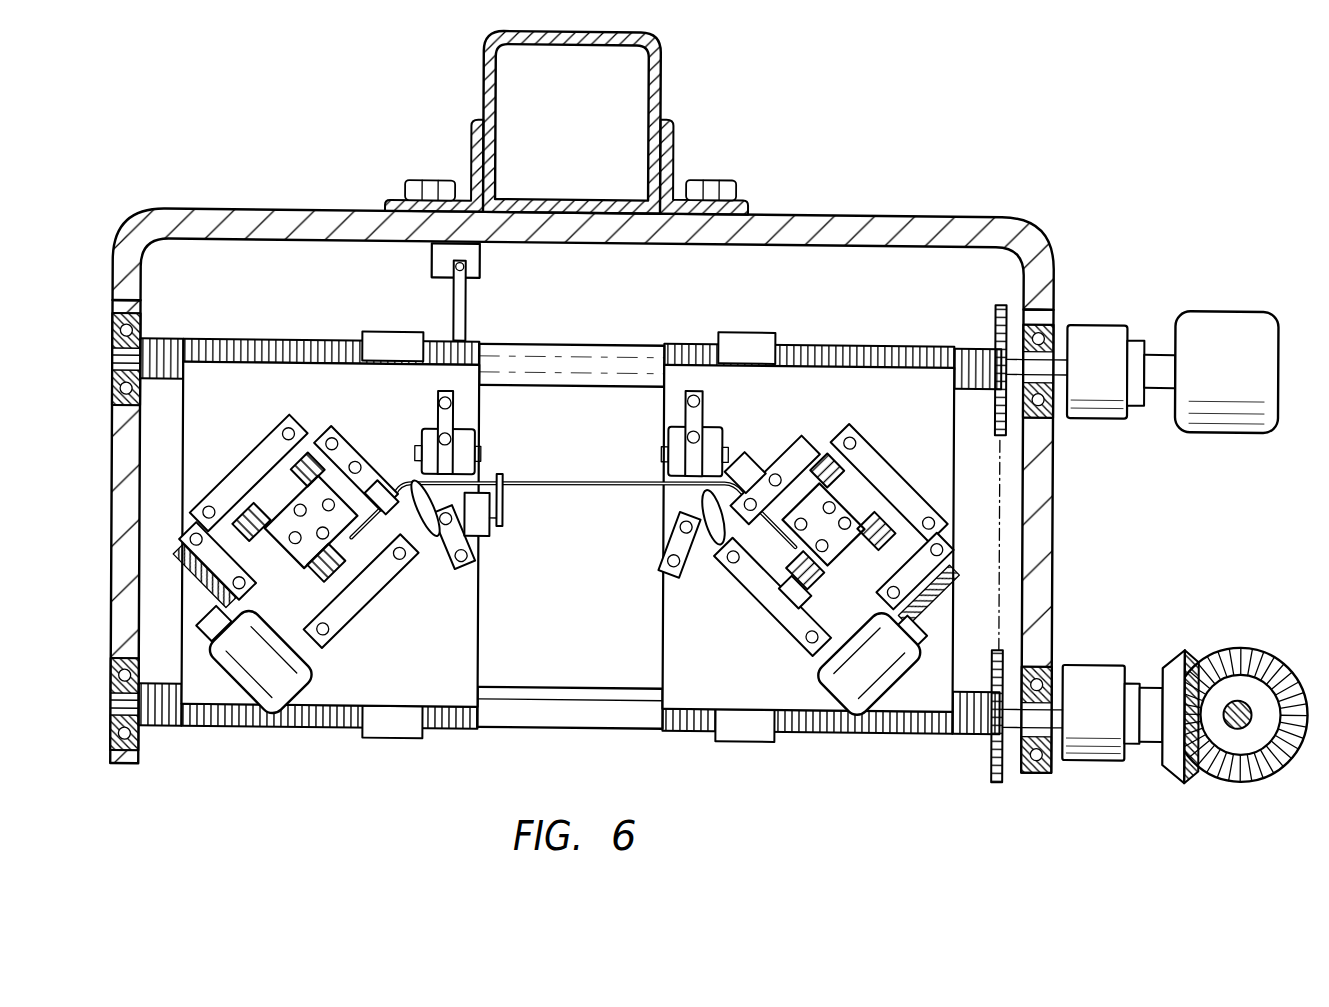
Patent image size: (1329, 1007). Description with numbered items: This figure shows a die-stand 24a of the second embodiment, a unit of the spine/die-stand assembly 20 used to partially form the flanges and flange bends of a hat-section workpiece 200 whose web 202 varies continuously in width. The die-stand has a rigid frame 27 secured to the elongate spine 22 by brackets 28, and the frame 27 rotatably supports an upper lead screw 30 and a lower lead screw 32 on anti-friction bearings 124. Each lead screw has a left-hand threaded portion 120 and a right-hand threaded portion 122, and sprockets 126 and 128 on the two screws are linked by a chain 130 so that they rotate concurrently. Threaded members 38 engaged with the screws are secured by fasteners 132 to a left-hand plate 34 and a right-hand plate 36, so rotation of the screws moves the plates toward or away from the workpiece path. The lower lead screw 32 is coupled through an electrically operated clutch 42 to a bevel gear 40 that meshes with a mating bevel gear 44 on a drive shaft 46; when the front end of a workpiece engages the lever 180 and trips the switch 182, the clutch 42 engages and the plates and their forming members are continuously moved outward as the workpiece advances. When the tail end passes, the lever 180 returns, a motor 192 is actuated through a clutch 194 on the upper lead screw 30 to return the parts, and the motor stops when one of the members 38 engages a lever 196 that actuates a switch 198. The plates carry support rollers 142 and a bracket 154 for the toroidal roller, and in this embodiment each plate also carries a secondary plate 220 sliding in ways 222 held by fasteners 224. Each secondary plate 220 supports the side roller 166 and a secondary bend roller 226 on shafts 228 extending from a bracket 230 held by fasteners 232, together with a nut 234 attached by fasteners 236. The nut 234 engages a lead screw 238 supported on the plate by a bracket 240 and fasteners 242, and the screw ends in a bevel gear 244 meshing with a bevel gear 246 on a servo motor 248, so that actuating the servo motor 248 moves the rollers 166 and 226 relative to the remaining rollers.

The spine/die-stand assembly 20 is at (380, 76).
The spine 22 is at (485, 71).
The die-stand 24a is at (265, 190).
The frame 27 is at (1052, 514).
The brackets 28 is at (472, 147).
The upper lead screw 30 is at (910, 328).
The lower lead screw 32 is at (948, 731).
The left-hand plate 34 is at (184, 460).
The right-hand plate 36 is at (955, 437).
The members 38 is at (393, 342).
The bevel gear 40 is at (1180, 754).
The clutch 42 is at (1089, 670).
The bevel gear 44 is at (1285, 756).
The drive shaft 46 is at (1234, 716).
The left-hand threaded portion 120 is at (848, 334).
The right-hand threaded portion 122 is at (236, 338).
The anti-friction bearings 124 is at (115, 325).
The sprocket 126 is at (997, 310).
The sprocket 128 is at (996, 772).
The chain 130 is at (1030, 460).
The fasteners 132 is at (402, 363).
The support rollers 142 is at (445, 456).
The bracket 154 is at (470, 544).
The guide roller 166 is at (350, 577).
The lever 180 is at (504, 504).
The switch 182 is at (481, 519).
The motor 192 is at (1215, 328).
The clutch 194 is at (1095, 330).
The lever 196 is at (454, 299).
The switch 198 is at (481, 261).
The workpiece 200 is at (600, 466).
The web 202 is at (596, 484).
The secondary plates 220 is at (375, 580).
The ways 222 is at (268, 443).
The fasteners 224 is at (865, 432).
The secondary bend roller 226 is at (360, 453).
The shafts 228 is at (746, 455).
The bracket 230 is at (305, 538).
The fasteners 232 is at (822, 560).
The nut 234 is at (272, 428).
The fasteners 236 is at (862, 492).
The lead screw 238 is at (310, 455).
The bracket 240 is at (196, 543).
The fasteners 242 is at (931, 522).
The bevel gear 244 is at (198, 580).
The bevel gear 246 is at (205, 613).
The servo motor 248 is at (296, 662).